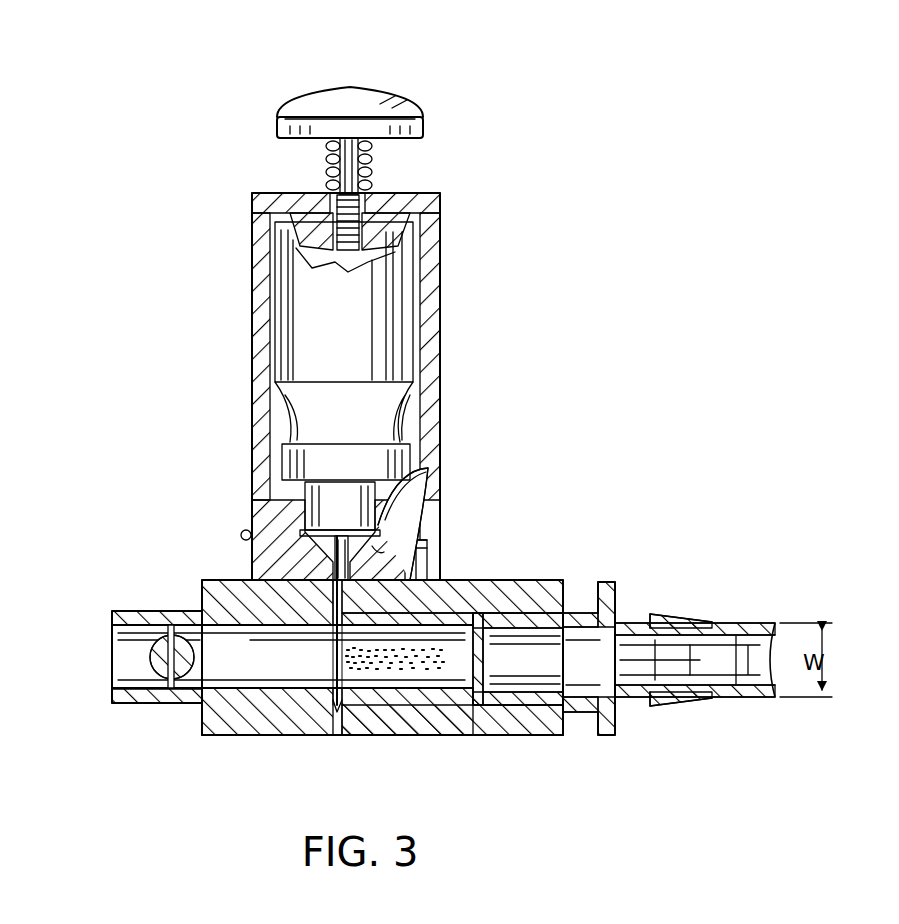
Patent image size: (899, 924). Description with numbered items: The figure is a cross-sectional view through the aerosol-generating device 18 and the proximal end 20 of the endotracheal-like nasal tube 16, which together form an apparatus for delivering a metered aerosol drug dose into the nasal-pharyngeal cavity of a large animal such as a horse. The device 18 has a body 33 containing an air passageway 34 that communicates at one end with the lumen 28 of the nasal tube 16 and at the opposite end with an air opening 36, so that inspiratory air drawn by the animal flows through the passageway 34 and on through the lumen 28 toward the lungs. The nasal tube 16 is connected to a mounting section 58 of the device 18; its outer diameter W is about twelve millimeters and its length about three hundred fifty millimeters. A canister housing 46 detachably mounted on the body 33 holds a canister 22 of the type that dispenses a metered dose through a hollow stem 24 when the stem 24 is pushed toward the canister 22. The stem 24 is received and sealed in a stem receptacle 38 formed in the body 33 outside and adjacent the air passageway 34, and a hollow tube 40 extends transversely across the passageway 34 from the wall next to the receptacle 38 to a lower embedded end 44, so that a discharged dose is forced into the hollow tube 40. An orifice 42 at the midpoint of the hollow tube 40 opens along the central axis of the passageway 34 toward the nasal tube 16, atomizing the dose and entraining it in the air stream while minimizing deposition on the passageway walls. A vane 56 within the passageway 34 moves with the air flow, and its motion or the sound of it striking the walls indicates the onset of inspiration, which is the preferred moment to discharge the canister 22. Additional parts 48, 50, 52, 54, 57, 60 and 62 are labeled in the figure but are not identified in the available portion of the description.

The nasal tube 16 is at (742, 700).
The aerosol-generating device 18 is at (210, 738).
The proximal end 20 is at (667, 614).
The canister 22 is at (282, 403).
The hollow stem 24 is at (302, 570).
The lumen 28 is at (735, 652).
The body 33 is at (255, 736).
The air passageway 34 is at (288, 670).
The air opening 36 is at (112, 657).
The stem receptacle 38 is at (383, 552).
The hollow tube 40 is at (335, 702).
The orifice 42 is at (362, 690).
The lower embedded end 44 is at (348, 710).
The canister housing 46 is at (252, 300).
The lever 48 is at (243, 533).
The adjustment assembly 50 is at (406, 134).
The knob 52 is at (353, 92).
The spring 54 is at (326, 162).
The vane 56 is at (180, 686).
The pin 57 is at (171, 624).
The mounting section 58 is at (522, 702).
The outlet fitting 60 is at (576, 600).
The flange 62 is at (607, 583).